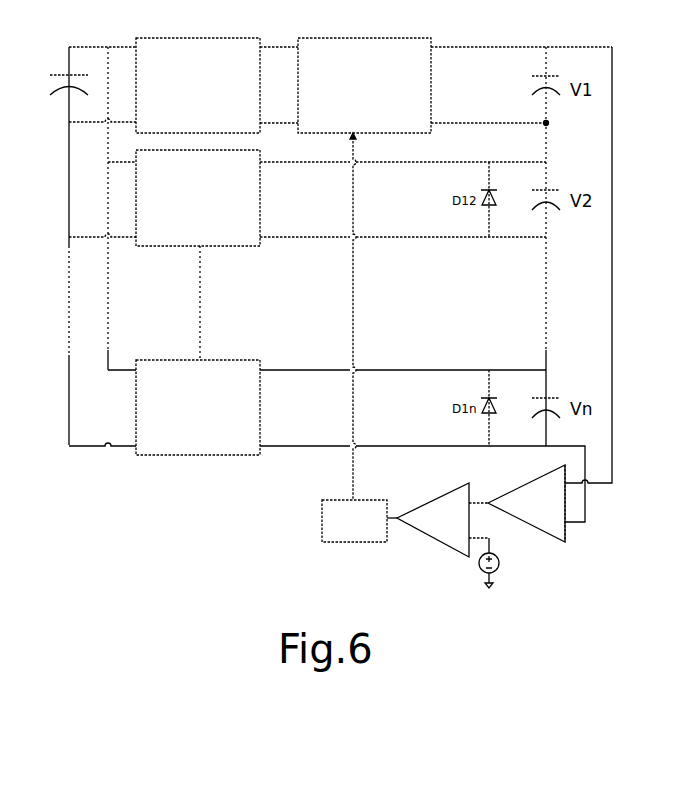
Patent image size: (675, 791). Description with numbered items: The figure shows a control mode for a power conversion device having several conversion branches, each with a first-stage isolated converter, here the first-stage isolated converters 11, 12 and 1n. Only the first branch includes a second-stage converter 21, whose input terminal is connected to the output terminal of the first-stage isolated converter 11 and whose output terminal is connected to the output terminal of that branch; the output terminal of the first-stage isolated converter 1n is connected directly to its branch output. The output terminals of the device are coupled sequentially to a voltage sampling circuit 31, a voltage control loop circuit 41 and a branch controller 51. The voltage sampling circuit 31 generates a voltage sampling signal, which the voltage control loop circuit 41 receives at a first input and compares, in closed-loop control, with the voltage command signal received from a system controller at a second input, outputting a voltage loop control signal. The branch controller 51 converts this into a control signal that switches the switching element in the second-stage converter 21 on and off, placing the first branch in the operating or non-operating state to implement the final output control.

The first-stage isolated converter 11 is at (188, 50).
The second-stage converter 21 is at (363, 43).
The first-stage isolated converter 12 is at (136, 210).
The first-stage isolated converter 1n is at (180, 372).
The branch controller 51 is at (330, 520).
The voltage control loop circuit 41 is at (438, 533).
The voltage sampling circuit 31 is at (545, 527).